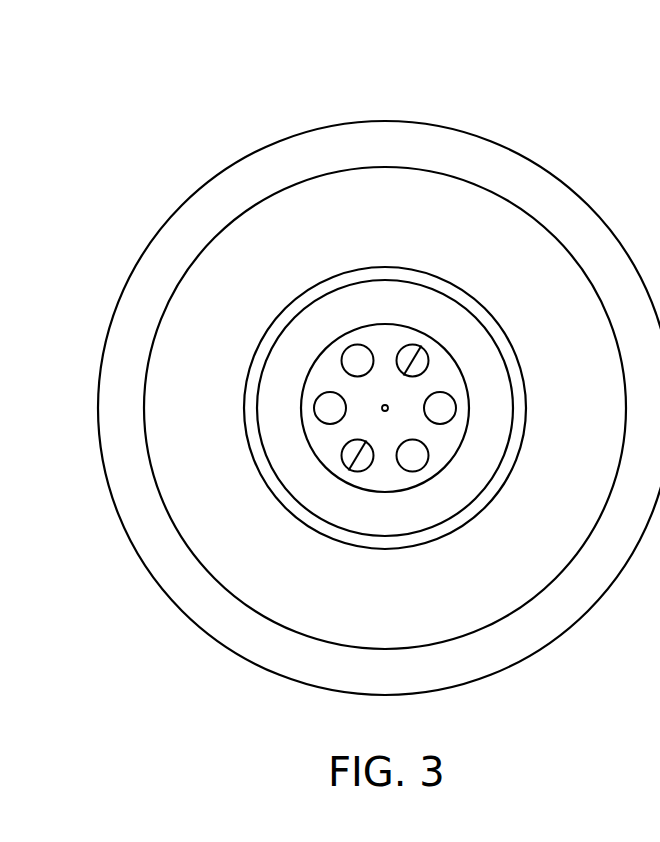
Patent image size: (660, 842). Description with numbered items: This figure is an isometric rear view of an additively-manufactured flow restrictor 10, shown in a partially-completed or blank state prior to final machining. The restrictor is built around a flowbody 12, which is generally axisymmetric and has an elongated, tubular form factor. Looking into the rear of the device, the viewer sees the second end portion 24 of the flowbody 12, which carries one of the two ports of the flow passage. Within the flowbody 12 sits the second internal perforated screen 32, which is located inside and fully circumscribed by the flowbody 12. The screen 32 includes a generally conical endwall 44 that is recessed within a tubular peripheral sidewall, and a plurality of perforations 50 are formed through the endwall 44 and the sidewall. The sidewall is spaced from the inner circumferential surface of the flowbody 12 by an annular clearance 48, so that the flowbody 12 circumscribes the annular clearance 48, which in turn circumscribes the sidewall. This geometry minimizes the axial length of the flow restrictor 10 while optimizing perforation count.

The additively-manufactured flow restrictor 10 is at (229, 124).
The flowbody 12 is at (543, 652).
The second end portion 24 is at (520, 162).
The second internal perforated screen 32 is at (403, 322).
The endwall 44 is at (373, 488).
The annular clearance 48 is at (292, 510).
The perforations 50 is at (349, 347).